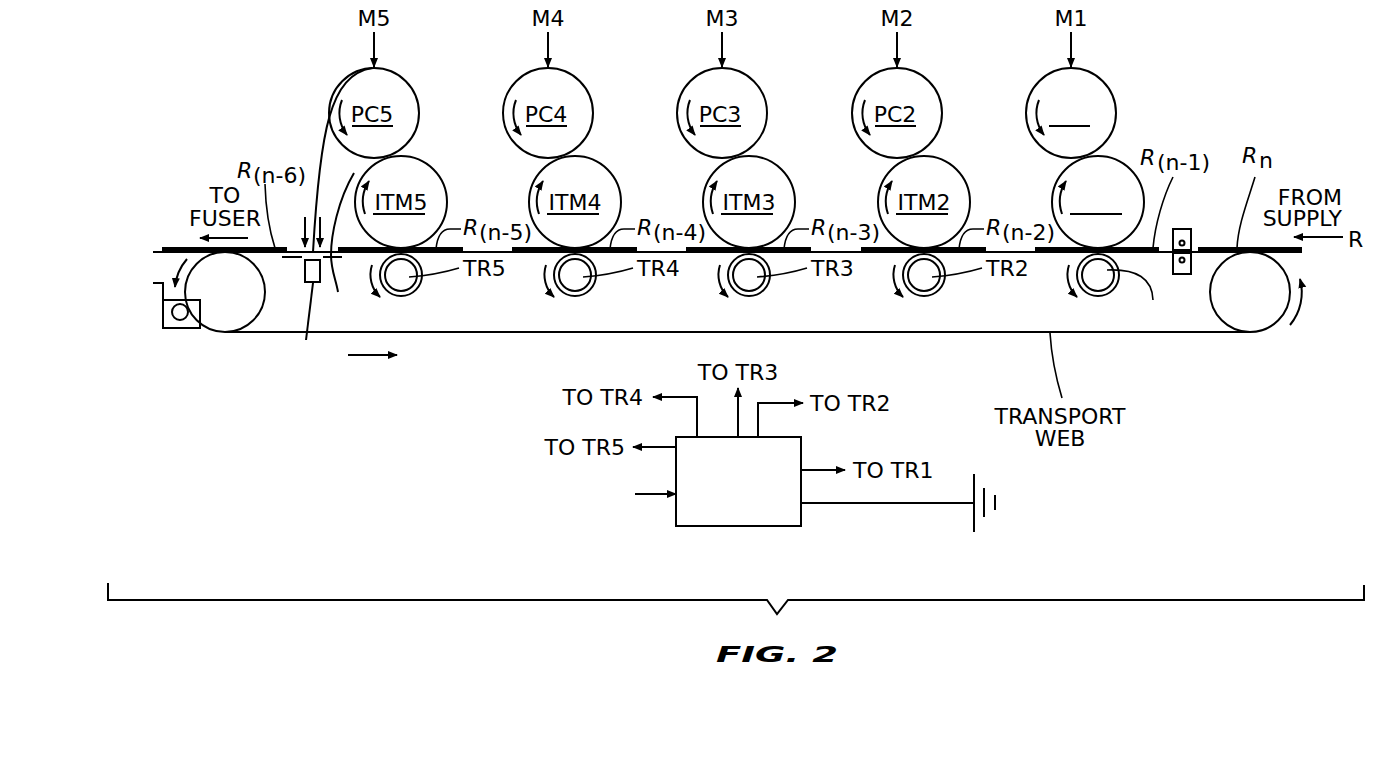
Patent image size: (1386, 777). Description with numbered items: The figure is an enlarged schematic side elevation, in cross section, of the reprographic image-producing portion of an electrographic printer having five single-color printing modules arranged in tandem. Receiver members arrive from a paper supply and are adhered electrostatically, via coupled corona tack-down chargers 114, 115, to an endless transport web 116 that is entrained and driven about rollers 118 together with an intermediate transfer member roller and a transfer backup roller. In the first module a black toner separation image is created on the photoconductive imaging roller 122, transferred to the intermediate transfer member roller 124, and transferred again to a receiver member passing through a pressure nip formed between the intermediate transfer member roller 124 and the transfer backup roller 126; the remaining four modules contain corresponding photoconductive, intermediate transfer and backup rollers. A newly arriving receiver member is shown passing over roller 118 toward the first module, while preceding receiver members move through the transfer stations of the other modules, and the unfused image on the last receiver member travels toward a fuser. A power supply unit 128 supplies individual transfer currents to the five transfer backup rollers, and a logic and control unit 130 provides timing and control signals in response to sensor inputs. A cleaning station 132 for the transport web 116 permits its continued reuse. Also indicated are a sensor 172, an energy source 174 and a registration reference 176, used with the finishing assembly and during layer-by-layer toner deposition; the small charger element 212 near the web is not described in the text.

The corona tack-down charger 114 is at (1191, 234).
The corona tack-down charger 115 is at (1183, 275).
The transport web 116 is at (1001, 333).
The roller 118 is at (1250, 329).
The photoconductive imaging roller 122 is at (1107, 82).
The intermediate transfer member roller 124 is at (1128, 165).
The transfer backup roller 126 is at (1100, 291).
The power supply unit 128 is at (730, 527).
The logic and control unit 130 is at (568, 494).
The cleaning station 132 is at (160, 295).
The sensor 172 is at (306, 329).
The energy source 174 is at (315, 132).
The registration reference 176 is at (340, 226).
The charger 212 is at (321, 289).